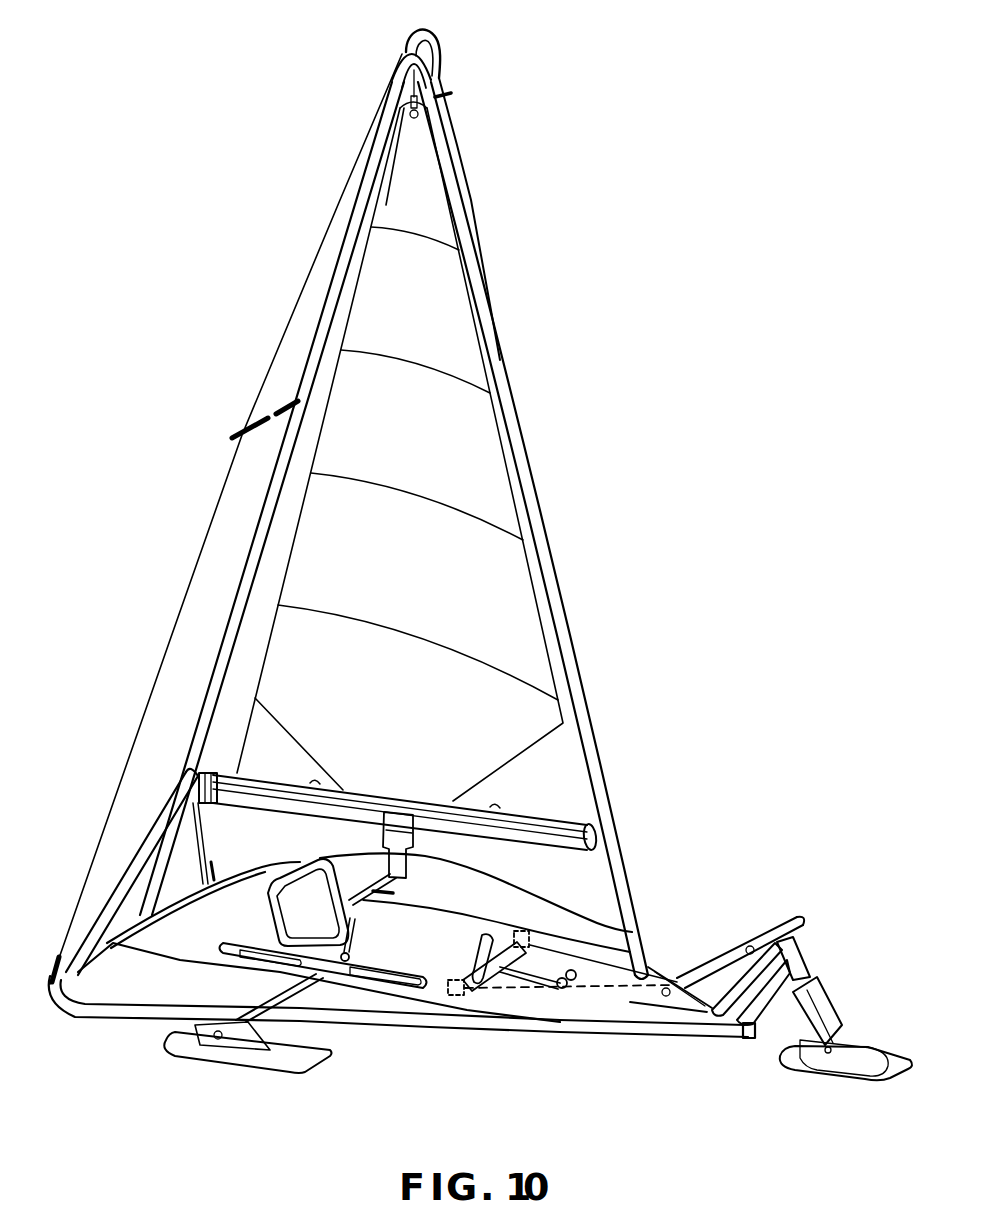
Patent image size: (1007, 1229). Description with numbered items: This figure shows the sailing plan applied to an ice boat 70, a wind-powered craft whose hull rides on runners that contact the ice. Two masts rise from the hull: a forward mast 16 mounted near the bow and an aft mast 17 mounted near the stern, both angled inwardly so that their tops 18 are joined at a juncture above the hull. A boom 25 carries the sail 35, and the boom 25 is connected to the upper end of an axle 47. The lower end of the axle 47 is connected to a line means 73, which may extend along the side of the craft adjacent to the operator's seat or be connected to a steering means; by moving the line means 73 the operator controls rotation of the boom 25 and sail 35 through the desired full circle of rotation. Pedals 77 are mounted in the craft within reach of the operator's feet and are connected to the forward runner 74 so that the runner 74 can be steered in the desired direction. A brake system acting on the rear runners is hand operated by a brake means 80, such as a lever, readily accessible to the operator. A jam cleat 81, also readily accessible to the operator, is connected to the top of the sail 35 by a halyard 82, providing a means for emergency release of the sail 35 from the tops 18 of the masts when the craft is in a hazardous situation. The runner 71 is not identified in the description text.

The forward mast 16 is at (497, 322).
The aft mast 17 is at (347, 252).
The tops of the masts 18 is at (408, 55).
The boom 25 is at (551, 862).
The sail 35 is at (476, 565).
The axle 47 is at (632, 925).
The ice boat 70 is at (196, 512).
The front runner 71 is at (292, 1060).
The line means 73 is at (343, 977).
The forward runner 74 is at (838, 1080).
The pedals 77 is at (485, 993).
The brake means 80 is at (350, 948).
The jam cleat 81 is at (365, 892).
The halyard 82 is at (466, 144).